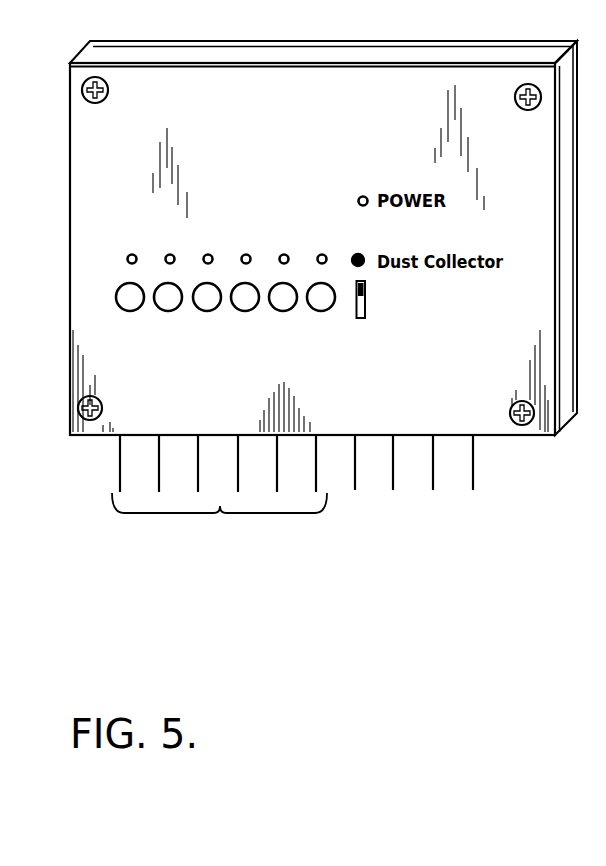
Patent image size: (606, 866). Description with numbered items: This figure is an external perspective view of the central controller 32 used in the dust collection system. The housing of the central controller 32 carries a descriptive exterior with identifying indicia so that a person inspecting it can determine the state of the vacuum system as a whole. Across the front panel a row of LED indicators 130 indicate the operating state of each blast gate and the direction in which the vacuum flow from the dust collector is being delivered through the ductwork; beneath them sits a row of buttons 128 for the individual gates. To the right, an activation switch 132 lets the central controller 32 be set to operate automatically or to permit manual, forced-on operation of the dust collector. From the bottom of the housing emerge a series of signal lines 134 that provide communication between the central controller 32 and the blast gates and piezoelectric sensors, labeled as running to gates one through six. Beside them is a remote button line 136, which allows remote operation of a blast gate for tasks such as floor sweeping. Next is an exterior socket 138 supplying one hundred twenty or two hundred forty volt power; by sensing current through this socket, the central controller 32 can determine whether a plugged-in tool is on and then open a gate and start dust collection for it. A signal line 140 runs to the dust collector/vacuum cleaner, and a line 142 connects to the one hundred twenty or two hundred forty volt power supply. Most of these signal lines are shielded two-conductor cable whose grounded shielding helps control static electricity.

The central controller 32 is at (453, 80).
The manual gate control buttons 128 is at (116, 296).
The LED indicators 130 is at (128, 256).
The activation switch 132 is at (371, 303).
The signal lines 134 is at (205, 595).
The remote button cable 136 is at (349, 703).
The exterior socket 138 is at (378, 805).
The signal line to dust collector/vacuum cleaner 140 is at (428, 768).
The line to 120/240 volt power supply 142 is at (485, 803).